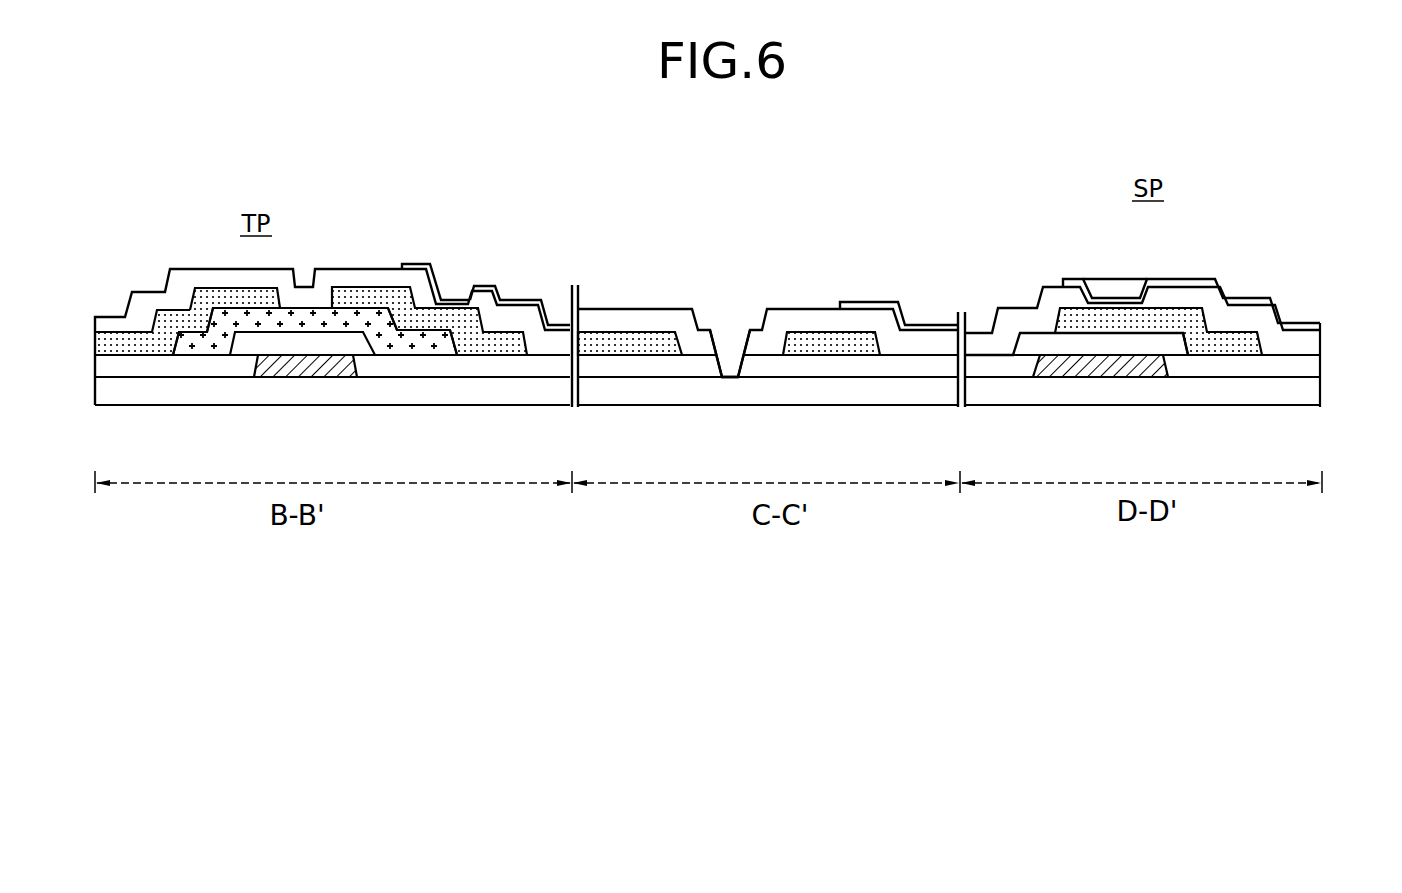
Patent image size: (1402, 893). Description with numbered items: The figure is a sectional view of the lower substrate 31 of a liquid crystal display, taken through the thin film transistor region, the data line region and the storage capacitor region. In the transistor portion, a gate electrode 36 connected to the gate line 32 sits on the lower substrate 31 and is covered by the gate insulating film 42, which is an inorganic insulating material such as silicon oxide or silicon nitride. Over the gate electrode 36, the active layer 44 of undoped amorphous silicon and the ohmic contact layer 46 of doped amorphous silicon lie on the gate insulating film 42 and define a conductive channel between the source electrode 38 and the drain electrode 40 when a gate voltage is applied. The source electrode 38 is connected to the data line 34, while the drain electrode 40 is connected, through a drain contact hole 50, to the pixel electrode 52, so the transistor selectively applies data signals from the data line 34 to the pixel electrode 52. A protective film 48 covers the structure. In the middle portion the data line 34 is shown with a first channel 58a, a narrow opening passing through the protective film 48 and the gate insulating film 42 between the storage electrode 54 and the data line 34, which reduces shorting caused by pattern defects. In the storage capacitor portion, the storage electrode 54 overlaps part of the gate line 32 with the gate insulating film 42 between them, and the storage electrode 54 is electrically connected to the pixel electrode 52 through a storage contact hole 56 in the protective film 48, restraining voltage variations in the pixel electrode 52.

The lower substrate 31 is at (1322, 397).
The gate line 32 is at (1065, 368).
The data line 34 is at (650, 357).
The gate electrode 36 is at (298, 368).
The source electrode 38 is at (137, 357).
The drain electrode 40 is at (500, 357).
The gate insulating film 42 is at (1322, 363).
The active layer 44 is at (209, 357).
The ohmic contact layer 46 is at (405, 357).
The protective film 48 is at (1322, 340).
The drain contact hole 50 is at (455, 280).
The pixel electrode 52 is at (539, 298).
The storage electrode 54 is at (830, 357).
The storage contact hole 56 is at (1115, 282).
The first channel 58a is at (731, 330).